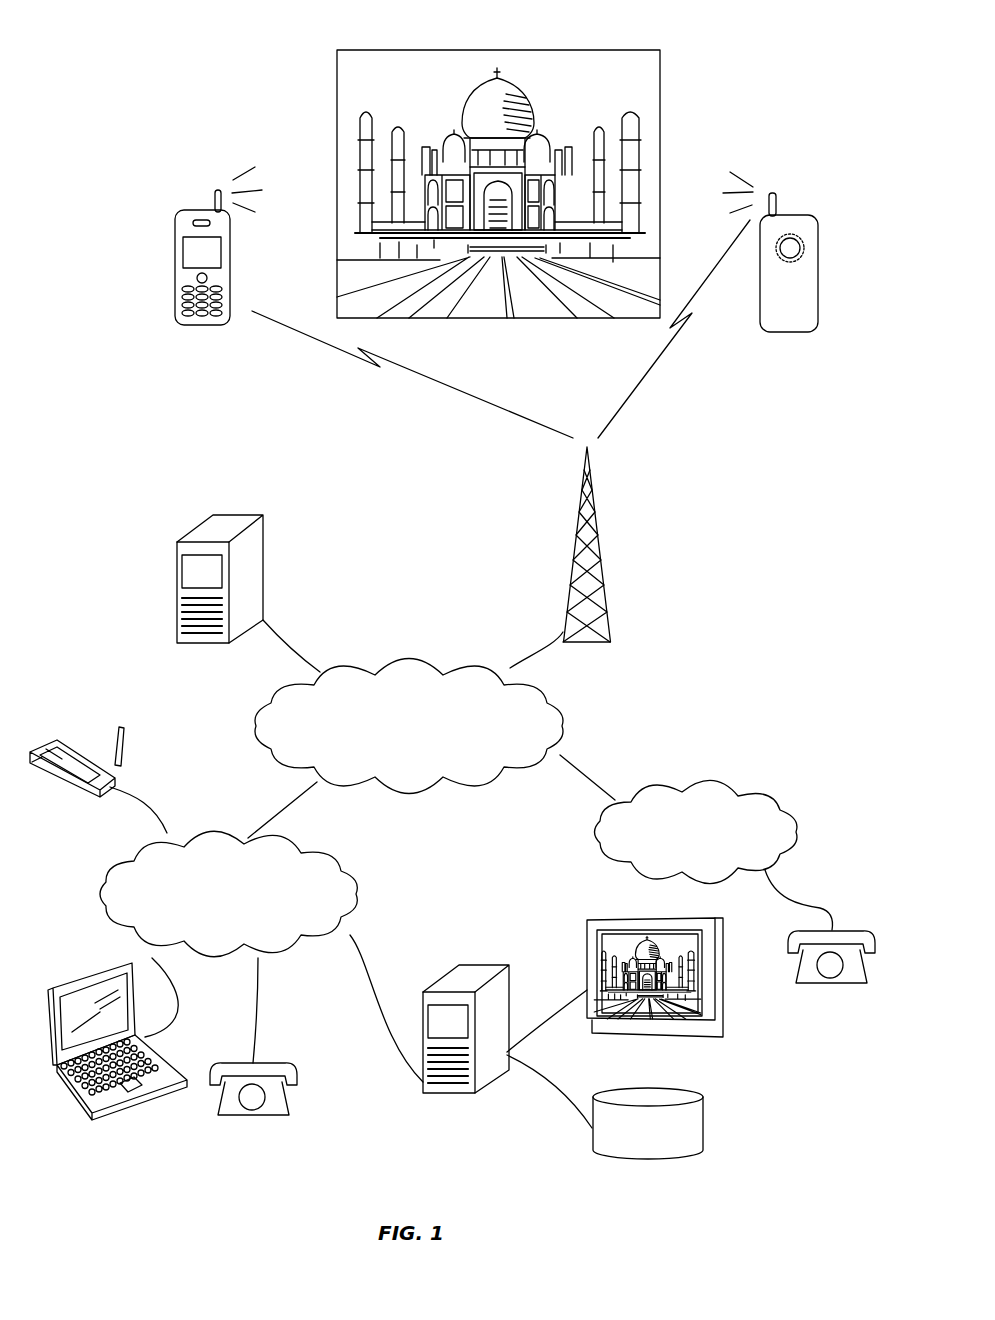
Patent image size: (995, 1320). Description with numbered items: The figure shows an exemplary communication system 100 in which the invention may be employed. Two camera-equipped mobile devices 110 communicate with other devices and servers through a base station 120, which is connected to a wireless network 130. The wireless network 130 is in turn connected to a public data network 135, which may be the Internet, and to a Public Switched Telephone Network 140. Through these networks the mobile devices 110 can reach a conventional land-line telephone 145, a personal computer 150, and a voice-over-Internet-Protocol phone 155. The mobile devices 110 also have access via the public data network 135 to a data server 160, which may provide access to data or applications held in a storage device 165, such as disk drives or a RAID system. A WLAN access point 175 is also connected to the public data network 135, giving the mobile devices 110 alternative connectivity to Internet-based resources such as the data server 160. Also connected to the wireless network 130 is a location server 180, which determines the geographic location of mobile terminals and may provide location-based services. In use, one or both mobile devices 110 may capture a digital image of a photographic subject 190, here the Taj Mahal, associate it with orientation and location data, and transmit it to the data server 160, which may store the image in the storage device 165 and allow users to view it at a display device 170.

The communication system 100 is at (177, 73).
The mobile devices 110 is at (193, 326).
The base station 120 is at (600, 578).
The wireless network 130 is at (391, 759).
The public data network 135 is at (210, 926).
The Public Switched Telephone Network 140 is at (676, 856).
The land-line telephone 145 is at (820, 986).
The personal computer 150 is at (87, 1105).
The VoIP phone 155 is at (232, 1118).
The data server 160 is at (447, 1094).
The storage device 165 is at (704, 1112).
The display device 170 is at (722, 1015).
The WLAN access point 175 is at (78, 788).
The location server 180 is at (265, 548).
The photographic subject 190 is at (660, 94).